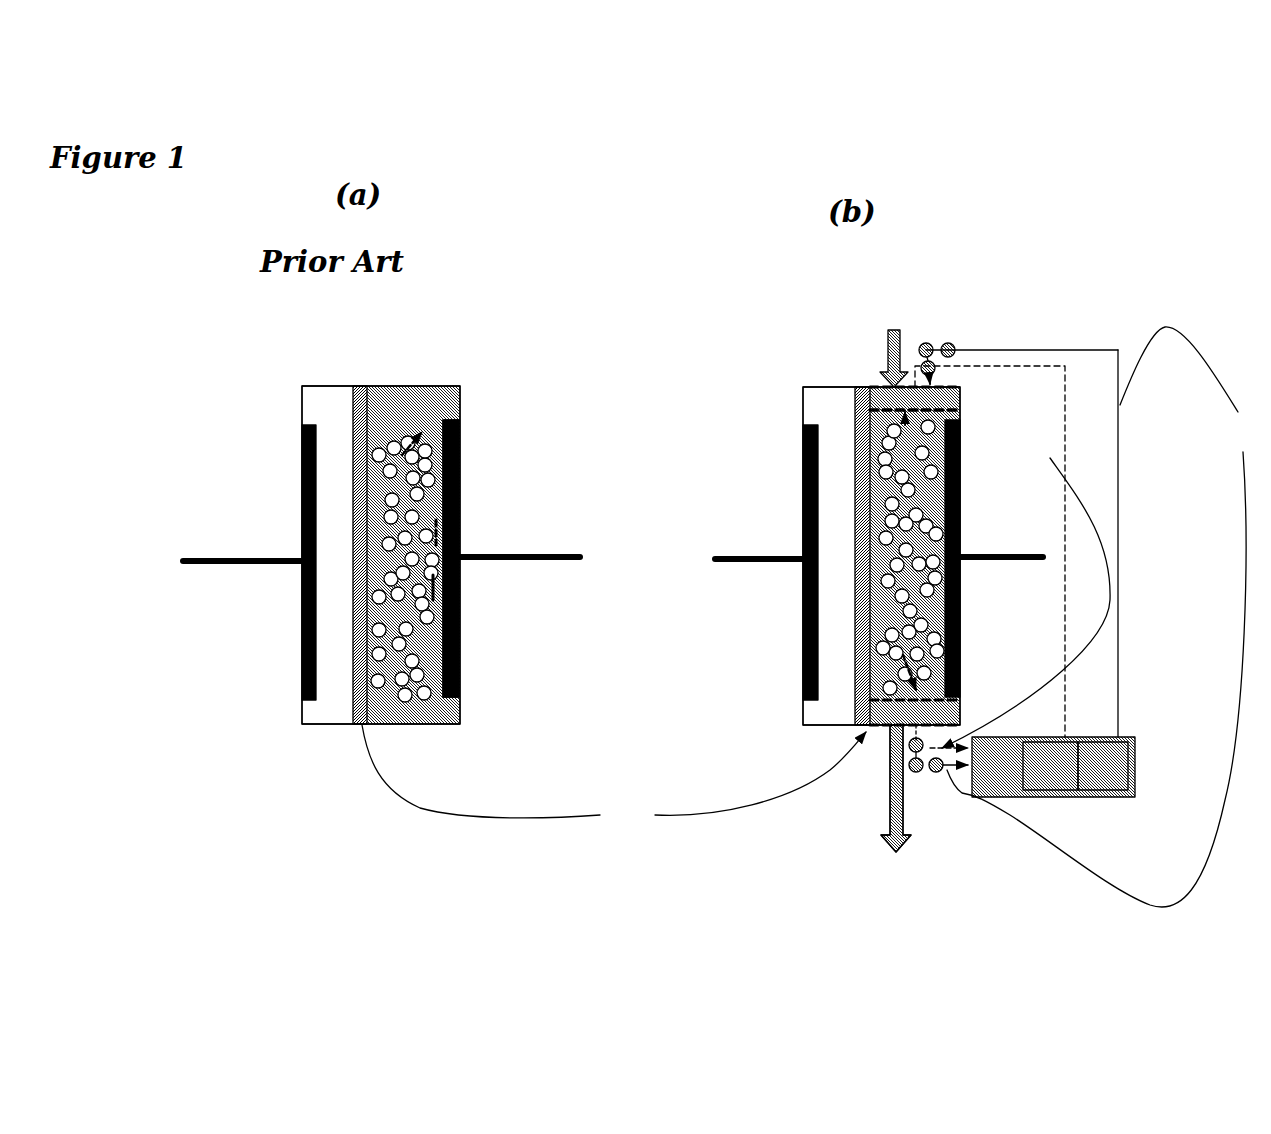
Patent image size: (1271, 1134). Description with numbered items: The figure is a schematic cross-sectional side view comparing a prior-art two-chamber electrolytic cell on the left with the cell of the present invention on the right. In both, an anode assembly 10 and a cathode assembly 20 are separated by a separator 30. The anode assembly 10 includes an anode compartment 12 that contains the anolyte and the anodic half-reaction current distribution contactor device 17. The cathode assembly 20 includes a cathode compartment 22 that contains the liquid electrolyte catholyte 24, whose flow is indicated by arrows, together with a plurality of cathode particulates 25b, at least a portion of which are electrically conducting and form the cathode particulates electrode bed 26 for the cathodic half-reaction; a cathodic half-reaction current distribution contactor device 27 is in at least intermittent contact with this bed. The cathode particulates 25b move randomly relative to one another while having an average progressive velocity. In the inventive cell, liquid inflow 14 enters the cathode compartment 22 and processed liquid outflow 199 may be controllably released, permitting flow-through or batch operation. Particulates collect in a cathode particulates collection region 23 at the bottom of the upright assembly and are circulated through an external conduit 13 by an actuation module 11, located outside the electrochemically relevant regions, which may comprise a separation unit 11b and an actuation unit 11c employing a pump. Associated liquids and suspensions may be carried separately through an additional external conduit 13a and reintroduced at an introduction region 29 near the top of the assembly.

The anode assembly 10 is at (284, 407).
The actuation module 11 is at (1013, 786).
The separation unit 11b is at (1072, 784).
The actuation unit 11c is at (1125, 784).
The anode compartment 12 is at (338, 421).
The external conduit 13 is at (1104, 617).
The additional external conduit 13a is at (1018, 372).
The liquid inflow 14 is at (888, 344).
The anodic half-reaction current distribution contactor device 17 is at (285, 542).
The cathode assembly 20 is at (466, 702).
The cathode compartment 22 is at (406, 421).
The cathode particulates collection region 23 is at (942, 718).
The liquid electrolyte catholyte 24 is at (455, 720).
The cathode particulates 25b is at (416, 420).
The cathode particulates electrode bed 26 is at (416, 602).
The cathodic half-reaction current distribution contactor device 27 is at (513, 548).
The introduction region 29 is at (932, 437).
The separator 30 is at (614, 780).
The processed liquid outflow 199 is at (902, 800).